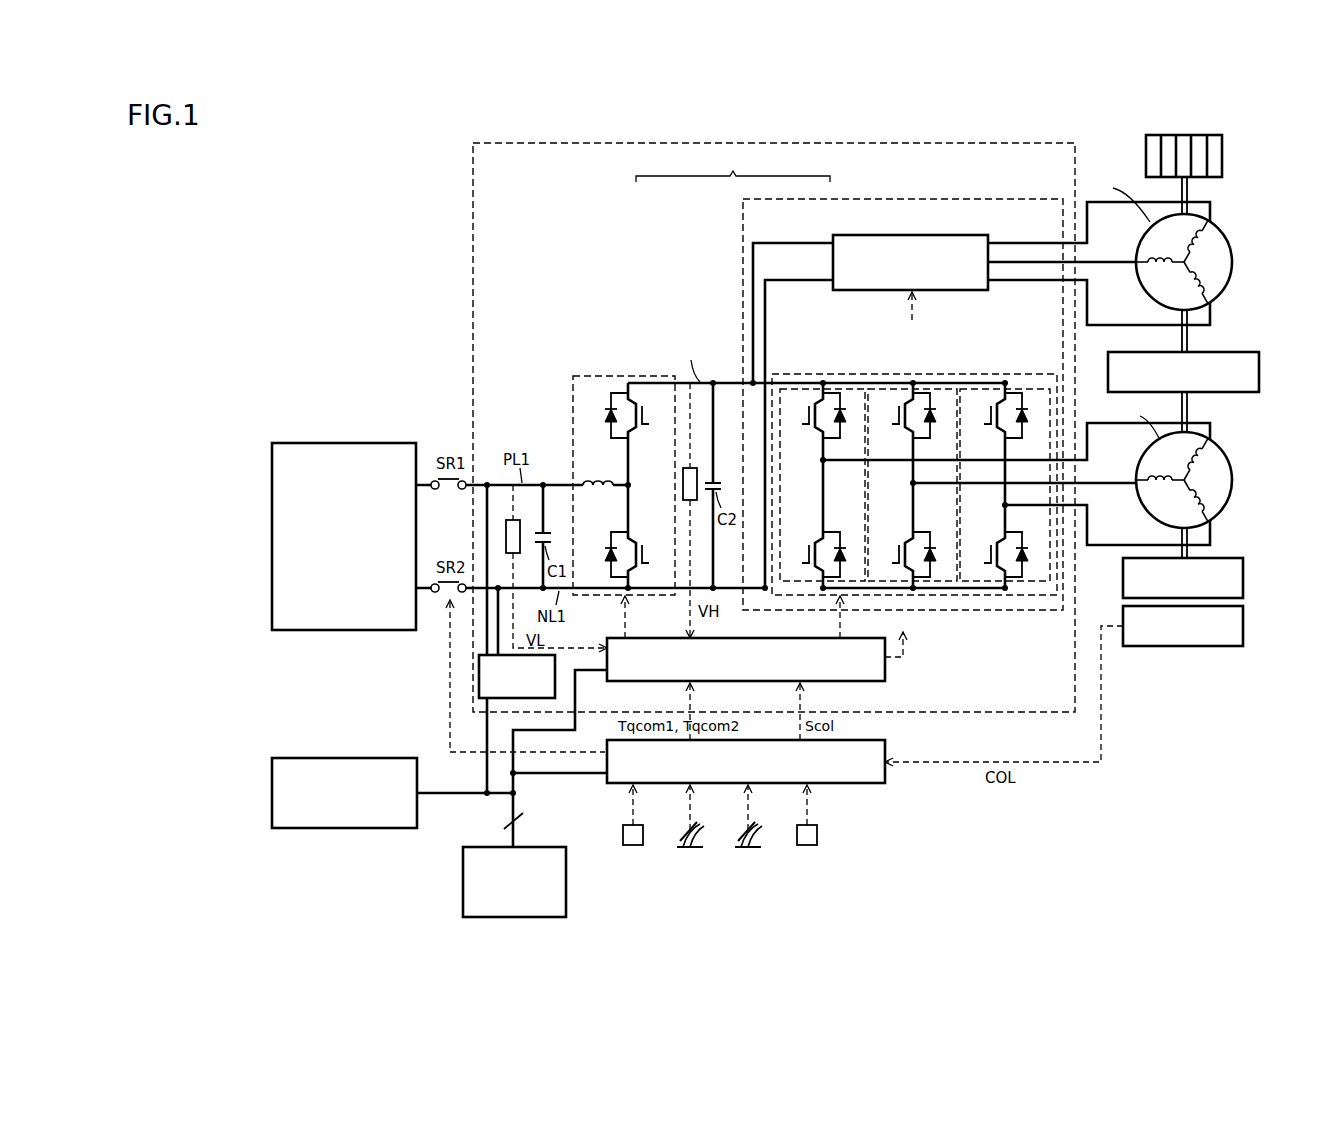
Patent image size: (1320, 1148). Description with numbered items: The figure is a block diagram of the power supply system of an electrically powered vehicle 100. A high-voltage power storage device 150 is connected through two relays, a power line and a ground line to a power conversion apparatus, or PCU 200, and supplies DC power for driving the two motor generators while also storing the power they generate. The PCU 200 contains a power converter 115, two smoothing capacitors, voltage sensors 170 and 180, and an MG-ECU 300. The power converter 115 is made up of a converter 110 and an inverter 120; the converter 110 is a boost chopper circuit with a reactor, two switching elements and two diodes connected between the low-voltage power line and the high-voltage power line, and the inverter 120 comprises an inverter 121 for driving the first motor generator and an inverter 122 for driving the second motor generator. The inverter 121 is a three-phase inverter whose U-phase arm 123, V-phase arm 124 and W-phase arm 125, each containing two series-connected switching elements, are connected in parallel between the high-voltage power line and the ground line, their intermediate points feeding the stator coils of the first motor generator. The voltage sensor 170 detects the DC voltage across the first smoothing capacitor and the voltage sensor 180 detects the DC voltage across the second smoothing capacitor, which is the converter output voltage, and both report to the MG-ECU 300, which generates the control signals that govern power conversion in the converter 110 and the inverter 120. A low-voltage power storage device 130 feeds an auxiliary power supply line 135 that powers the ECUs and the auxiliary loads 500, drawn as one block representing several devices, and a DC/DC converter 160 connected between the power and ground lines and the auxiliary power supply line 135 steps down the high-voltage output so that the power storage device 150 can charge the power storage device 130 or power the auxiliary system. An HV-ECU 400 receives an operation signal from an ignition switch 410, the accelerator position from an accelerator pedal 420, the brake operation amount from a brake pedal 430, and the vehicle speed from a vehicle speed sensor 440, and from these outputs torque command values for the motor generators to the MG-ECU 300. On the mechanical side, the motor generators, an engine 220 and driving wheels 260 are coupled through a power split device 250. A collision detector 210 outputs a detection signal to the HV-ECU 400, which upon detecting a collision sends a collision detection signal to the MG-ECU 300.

The electrically powered vehicle 100 is at (1145, 871).
The converter 110 is at (640, 376).
The power converter 115 is at (733, 167).
The inverter 120 is at (770, 199).
The inverter 121 is at (795, 374).
The inverter 122 is at (957, 235).
The U-phase arm 123 is at (843, 389).
The V-phase arm 124 is at (940, 389).
The W-phase arm 125 is at (1035, 389).
The power storage device 130 is at (383, 758).
The auxiliary power supply line 135 is at (454, 800).
The power storage device 150 is at (382, 443).
The DC/DC converter 160 is at (479, 673).
The voltage sensor 170 is at (553, 568).
The voltage sensor 180 is at (692, 510).
The power conversion apparatus (PCU) 200 is at (528, 143).
The collision detector 210 is at (1243, 626).
The engine 220 is at (1243, 558).
The power split device 250 is at (1205, 352).
The driving wheels 260 is at (1222, 156).
The MG-ECU 300 is at (855, 681).
The HV-ECU 400 is at (855, 783).
The ignition switch 410 is at (633, 845).
The accelerator pedal 420 is at (748, 847).
The brake pedal 430 is at (690, 847).
The vehicle speed sensor 440 is at (807, 845).
The auxiliary loads 500 is at (463, 887).